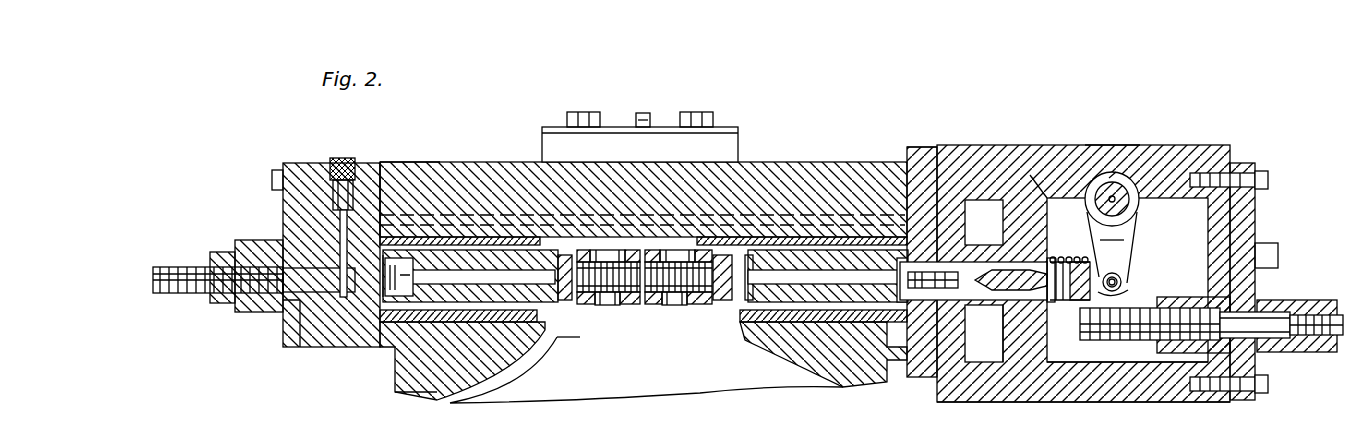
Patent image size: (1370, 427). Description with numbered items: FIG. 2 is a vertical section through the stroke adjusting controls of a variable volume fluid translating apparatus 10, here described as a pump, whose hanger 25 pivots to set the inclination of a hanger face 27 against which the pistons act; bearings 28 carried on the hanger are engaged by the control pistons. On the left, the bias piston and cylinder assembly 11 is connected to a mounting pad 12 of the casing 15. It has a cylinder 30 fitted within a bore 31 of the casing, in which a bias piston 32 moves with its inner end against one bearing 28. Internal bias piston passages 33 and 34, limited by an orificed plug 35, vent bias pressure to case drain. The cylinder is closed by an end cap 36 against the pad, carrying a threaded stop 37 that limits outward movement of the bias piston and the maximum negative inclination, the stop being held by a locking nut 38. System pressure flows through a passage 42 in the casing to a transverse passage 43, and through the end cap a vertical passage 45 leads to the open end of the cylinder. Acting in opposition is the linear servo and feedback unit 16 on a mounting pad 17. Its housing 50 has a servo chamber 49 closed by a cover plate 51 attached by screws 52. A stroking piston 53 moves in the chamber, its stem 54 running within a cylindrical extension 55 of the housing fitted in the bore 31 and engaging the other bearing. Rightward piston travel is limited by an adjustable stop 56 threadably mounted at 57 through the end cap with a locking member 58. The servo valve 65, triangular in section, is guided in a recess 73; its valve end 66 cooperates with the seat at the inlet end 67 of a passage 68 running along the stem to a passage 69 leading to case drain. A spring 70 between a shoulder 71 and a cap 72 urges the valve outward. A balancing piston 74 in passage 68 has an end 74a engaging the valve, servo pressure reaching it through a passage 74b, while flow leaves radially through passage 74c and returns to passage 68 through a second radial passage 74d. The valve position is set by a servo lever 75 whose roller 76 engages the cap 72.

The fluid translating apparatus 10 is at (346, 378).
The bias piston and cylinder assembly 11 is at (280, 160).
The mounting pad 12 is at (382, 163).
The casing 15 is at (773, 162).
The linear servo and feedback unit 16 is at (1015, 137).
The mounting pad 17 is at (907, 148).
The hanger 25 is at (662, 306).
The hanger face 27 is at (612, 389).
The bearings 28 is at (640, 296).
The cylinder 30 is at (442, 248).
The bore 31 is at (397, 302).
The bias piston 32 is at (493, 300).
The internal bias piston passage 33 is at (493, 280).
The internal bias piston passage 34 is at (580, 338).
The plug 35 is at (400, 270).
The end cap 36 is at (292, 340).
The threaded stop 37 is at (258, 312).
The locking nut 38 is at (218, 308).
The passage 42 is at (648, 213).
The passage 43 is at (497, 214).
The vertical passage 45 is at (336, 252).
The servo chamber 49 is at (1190, 221).
The housing 50 is at (1104, 160).
The cover plate 51 is at (1240, 224).
The screws 52 is at (1268, 180).
The stroking piston 53 is at (1042, 185).
The stem 54 is at (823, 348).
The cylindrical extension 55 is at (880, 243).
The adjustable stop 56 is at (1105, 362).
The threaded mounting 57 is at (1208, 330).
The locking member 58 is at (1319, 300).
The servo valve 65 is at (1023, 268).
The valve end 66 is at (973, 260).
The inlet end 67 is at (938, 262).
The passage 68 is at (806, 268).
The passage 69 is at (725, 302).
The spring 70 is at (1060, 258).
The shoulder 71 is at (986, 333).
The cap 72 is at (1128, 290).
The recess 73 is at (1055, 302).
The balancing piston 74 is at (921, 262).
The end 74a is at (985, 333).
The passage 74b is at (984, 222).
The passage 74c is at (1083, 389).
The second radial passage 74d is at (903, 266).
The servo lever 75 is at (1126, 237).
The roller 76 is at (1118, 280).